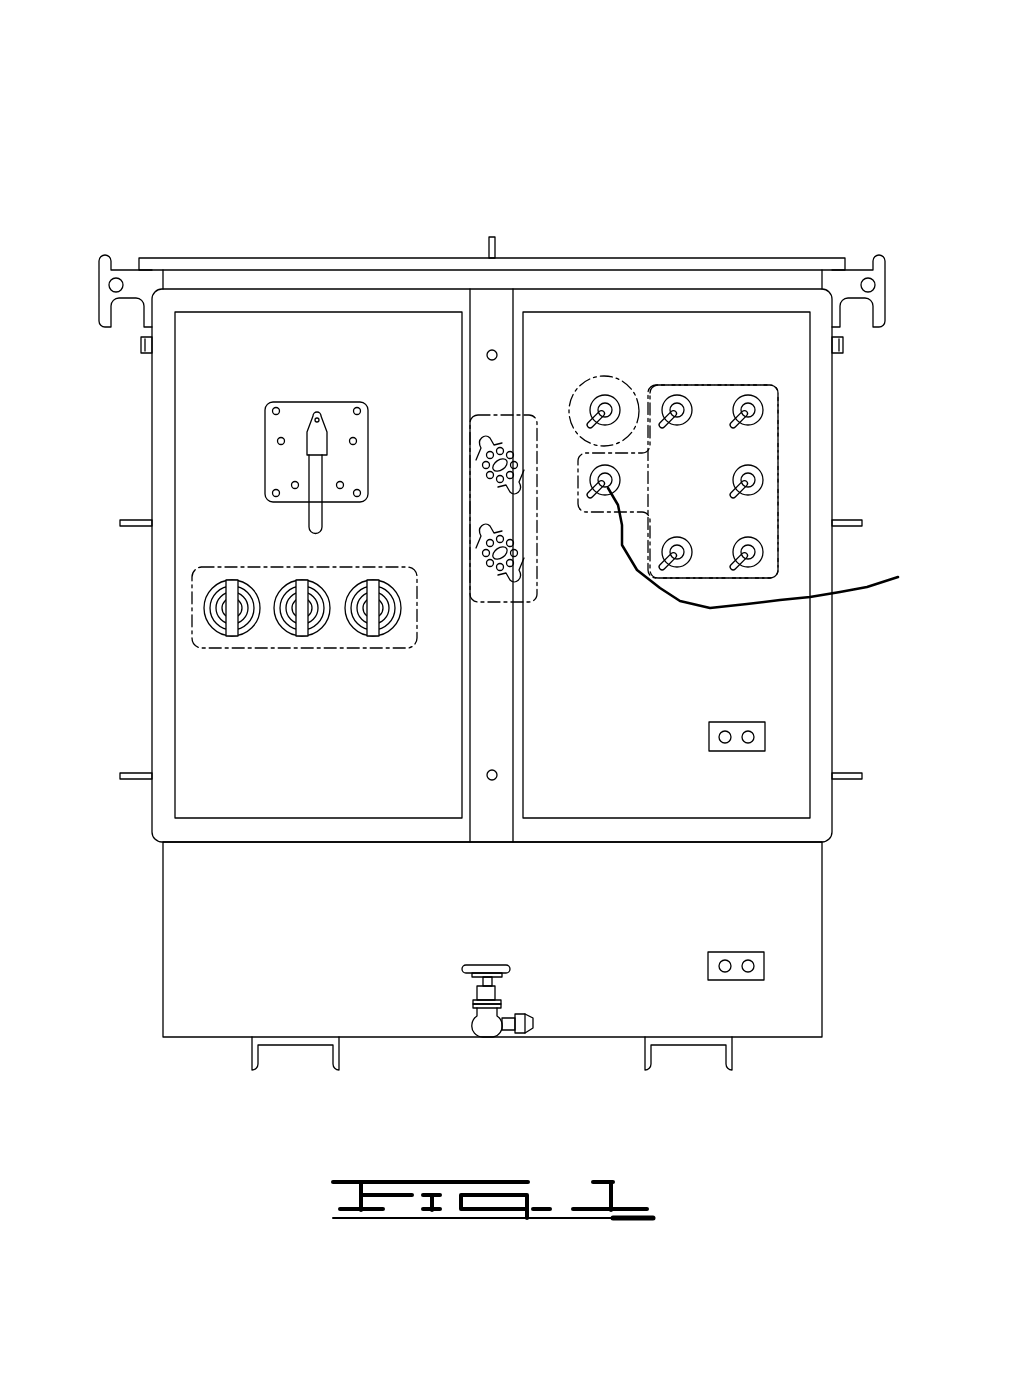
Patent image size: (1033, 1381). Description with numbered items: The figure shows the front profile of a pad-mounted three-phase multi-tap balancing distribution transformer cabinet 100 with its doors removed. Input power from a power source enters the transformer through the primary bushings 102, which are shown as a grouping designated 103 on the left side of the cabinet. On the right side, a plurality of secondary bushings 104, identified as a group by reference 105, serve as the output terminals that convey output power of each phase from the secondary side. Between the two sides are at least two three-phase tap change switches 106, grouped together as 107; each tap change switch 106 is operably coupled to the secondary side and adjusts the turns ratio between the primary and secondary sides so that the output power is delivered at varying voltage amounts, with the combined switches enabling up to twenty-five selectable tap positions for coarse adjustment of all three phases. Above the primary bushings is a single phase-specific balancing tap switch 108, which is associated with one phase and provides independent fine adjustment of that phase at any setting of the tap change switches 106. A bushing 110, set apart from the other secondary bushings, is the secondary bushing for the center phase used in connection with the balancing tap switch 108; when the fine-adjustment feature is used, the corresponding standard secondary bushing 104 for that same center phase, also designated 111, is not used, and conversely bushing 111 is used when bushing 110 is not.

The three-phase multi-tap distribution transformer cabinet 100 is at (255, 87).
The primary bushings 102 is at (213, 592).
The grouping of the primary bushings 103 is at (190, 610).
The secondary bushings 104 is at (678, 393).
The plurality of secondary bushings 105 is at (780, 447).
The three-phase tap change switch 106 is at (530, 582).
The grouping of three-phase tap change switches 107 is at (483, 413).
The phase-specific balancing tap switch 108 is at (292, 400).
The bushing 110 is at (603, 383).
The standard secondary bushing for the center phase 111 is at (773, 548).